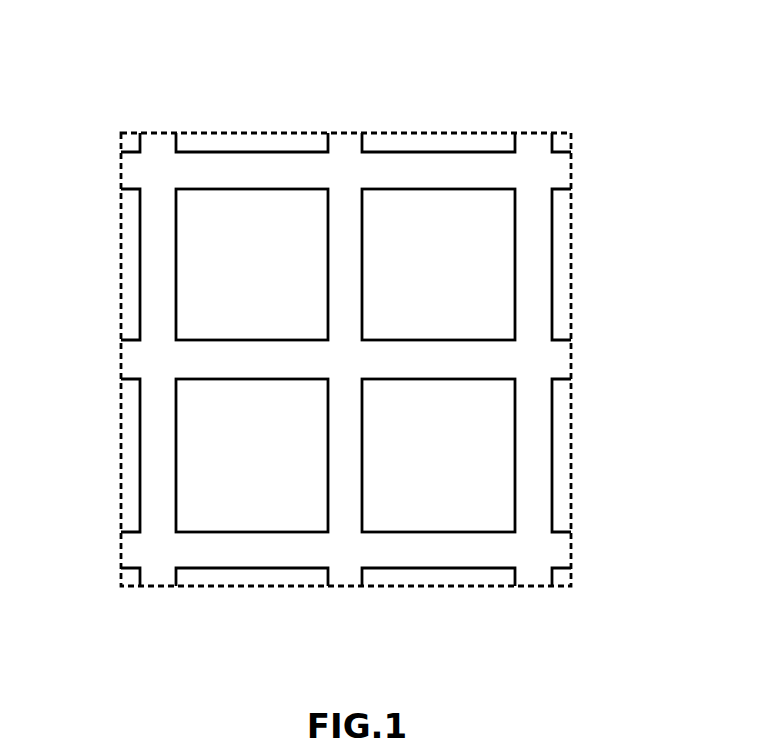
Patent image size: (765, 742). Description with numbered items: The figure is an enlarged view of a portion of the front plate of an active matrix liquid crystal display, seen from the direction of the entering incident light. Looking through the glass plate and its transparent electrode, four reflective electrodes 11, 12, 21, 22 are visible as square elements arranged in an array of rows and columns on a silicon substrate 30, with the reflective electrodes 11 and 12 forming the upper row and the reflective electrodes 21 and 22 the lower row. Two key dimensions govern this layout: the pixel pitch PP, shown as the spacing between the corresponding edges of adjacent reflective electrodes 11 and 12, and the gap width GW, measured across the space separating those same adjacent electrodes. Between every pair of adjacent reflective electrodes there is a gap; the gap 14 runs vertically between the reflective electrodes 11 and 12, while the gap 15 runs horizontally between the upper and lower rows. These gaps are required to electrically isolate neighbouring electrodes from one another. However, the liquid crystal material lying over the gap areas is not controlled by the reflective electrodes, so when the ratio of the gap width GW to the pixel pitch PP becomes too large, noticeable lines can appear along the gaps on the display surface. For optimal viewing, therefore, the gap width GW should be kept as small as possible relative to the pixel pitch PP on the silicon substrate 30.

The reflective electrode 11 is at (252, 264).
The reflective electrode 12 is at (438, 264).
The reflective electrode 21 is at (252, 455).
The reflective electrode 22 is at (438, 455).
The gap 14 is at (345, 217).
The gap 15 is at (215, 360).
The silicon substrate 30 is at (523, 358).
The pixel pitch PP is at (362, 125).
The gap width GW is at (285, 113).